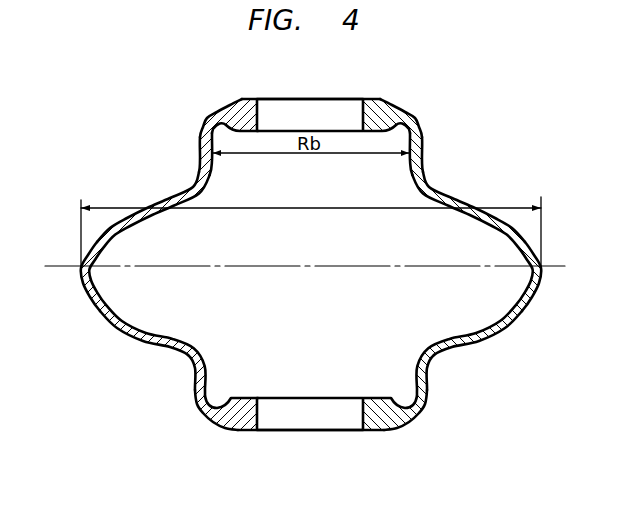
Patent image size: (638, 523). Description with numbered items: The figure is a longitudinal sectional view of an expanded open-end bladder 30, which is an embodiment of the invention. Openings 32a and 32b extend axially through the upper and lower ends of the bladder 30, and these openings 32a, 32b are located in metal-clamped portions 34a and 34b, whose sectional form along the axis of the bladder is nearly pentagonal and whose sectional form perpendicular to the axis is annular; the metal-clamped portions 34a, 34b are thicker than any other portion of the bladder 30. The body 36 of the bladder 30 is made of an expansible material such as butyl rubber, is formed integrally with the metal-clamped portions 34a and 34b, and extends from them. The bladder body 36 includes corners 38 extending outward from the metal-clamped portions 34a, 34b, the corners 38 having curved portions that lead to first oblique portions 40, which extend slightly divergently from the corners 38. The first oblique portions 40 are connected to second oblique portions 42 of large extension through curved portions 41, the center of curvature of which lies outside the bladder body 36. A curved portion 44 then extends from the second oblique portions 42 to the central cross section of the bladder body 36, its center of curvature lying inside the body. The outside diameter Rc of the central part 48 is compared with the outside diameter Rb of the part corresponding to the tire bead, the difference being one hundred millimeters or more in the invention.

The open-end bladder 30 is at (439, 151).
The opening 32a is at (348, 104).
The opening 32b is at (270, 427).
The metal-clamped portion 34a is at (248, 98).
The metal-clamped portion 34b is at (370, 431).
The bladder body 36 is at (92, 224).
The corner 38 is at (213, 112).
The first oblique portion 40 is at (198, 165).
The curved portion 41 is at (203, 185).
The second oblique portion 42 is at (143, 203).
The curved portion 44 is at (92, 258).
The central part 48 is at (81, 270).